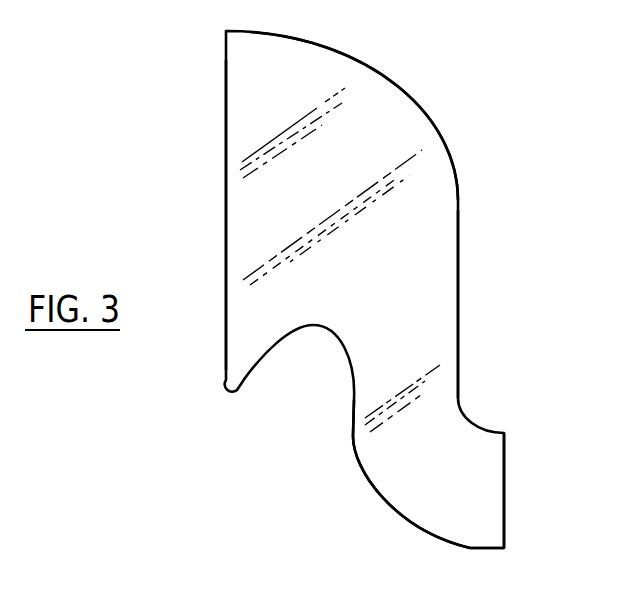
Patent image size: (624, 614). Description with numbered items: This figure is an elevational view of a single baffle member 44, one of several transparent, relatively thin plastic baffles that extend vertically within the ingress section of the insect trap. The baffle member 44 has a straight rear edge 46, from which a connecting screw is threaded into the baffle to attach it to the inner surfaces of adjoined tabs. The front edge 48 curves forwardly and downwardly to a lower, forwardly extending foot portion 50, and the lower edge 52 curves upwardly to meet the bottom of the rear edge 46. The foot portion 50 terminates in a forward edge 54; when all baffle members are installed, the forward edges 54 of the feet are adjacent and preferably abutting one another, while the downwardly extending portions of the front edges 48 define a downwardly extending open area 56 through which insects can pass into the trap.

The baffle member 44 is at (494, 90).
The rear edge 46 is at (226, 119).
The front edge 48 is at (438, 134).
The foot portion 50 is at (450, 513).
The lower edge 52 is at (358, 478).
The forward edge 54 is at (504, 480).
The open area 56 is at (473, 360).